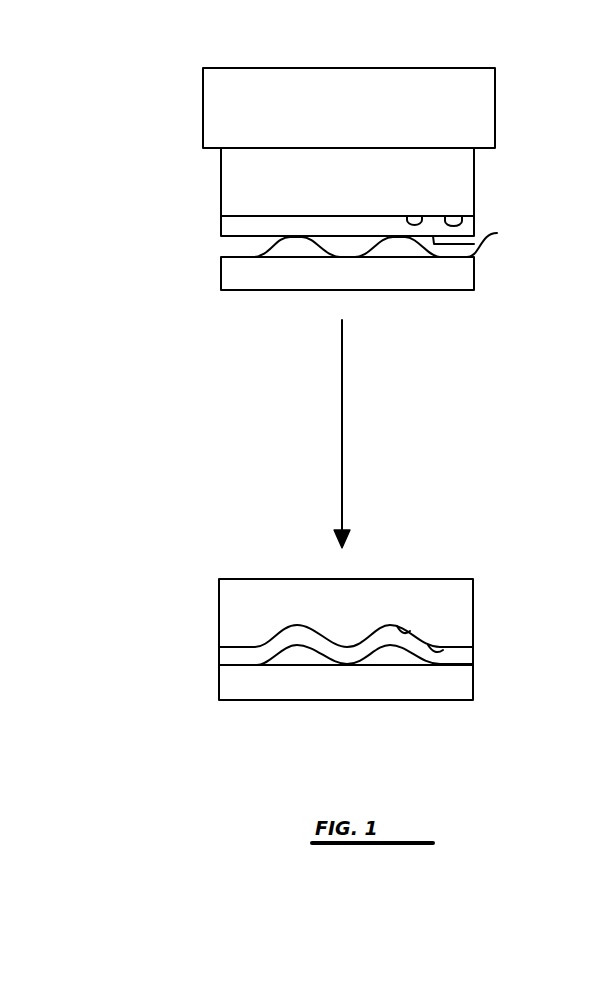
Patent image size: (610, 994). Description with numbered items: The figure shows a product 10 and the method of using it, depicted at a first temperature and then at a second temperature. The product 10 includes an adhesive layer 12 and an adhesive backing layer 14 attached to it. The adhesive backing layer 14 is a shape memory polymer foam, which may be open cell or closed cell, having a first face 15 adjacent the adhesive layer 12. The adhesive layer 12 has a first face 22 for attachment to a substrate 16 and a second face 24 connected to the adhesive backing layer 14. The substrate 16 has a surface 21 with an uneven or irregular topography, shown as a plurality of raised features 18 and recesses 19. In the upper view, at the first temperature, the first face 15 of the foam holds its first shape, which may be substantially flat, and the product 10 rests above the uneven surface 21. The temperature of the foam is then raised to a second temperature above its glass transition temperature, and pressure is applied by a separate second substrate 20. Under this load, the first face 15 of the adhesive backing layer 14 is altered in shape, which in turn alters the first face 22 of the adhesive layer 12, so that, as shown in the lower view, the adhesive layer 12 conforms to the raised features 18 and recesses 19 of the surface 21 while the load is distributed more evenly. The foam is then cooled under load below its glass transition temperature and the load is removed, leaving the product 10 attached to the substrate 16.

The product 10 is at (200, 194).
The adhesive layer 12 is at (222, 226).
The adhesive backing layer 14 is at (220, 180).
The first face 15 is at (467, 216).
The substrate 16 is at (500, 273).
The raised features 18 is at (288, 250).
The recesses 19 is at (337, 263).
The second substrate 20 is at (371, 75).
The surface 21 is at (497, 233).
The first face 22 is at (476, 235).
The second face 24 is at (427, 215).